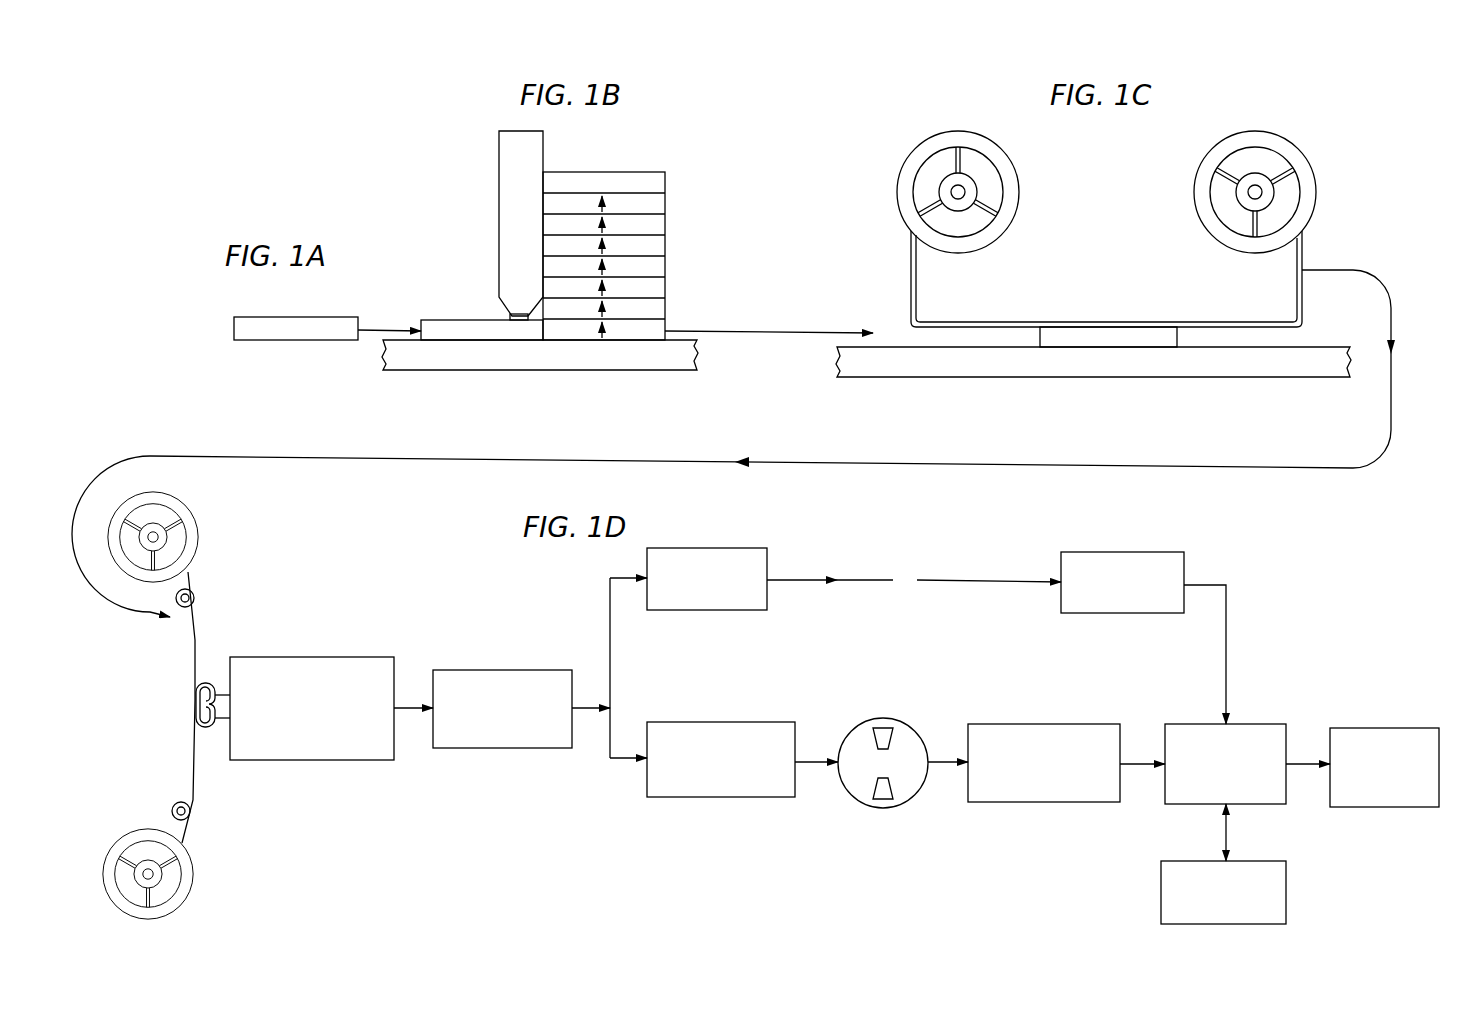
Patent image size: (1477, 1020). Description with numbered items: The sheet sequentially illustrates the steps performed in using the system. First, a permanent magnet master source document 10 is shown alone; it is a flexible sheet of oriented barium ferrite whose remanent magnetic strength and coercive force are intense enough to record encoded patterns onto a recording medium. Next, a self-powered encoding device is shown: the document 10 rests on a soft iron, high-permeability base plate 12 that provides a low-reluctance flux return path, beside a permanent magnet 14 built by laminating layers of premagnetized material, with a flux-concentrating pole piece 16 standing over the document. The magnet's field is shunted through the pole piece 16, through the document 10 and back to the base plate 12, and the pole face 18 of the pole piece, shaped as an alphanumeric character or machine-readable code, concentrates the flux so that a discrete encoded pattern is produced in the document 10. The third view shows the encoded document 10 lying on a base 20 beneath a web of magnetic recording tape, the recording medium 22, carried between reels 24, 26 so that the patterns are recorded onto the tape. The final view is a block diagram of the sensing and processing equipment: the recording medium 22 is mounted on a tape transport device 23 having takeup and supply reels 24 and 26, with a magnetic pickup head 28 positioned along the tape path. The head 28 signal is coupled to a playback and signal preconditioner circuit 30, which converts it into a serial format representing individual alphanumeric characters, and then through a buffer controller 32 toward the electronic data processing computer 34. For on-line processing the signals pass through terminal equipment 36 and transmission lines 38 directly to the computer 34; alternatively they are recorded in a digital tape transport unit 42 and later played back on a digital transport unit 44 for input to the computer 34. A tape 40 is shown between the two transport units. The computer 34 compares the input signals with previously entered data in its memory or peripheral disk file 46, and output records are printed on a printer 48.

In FIG. 1A, the permanent magnet master source document 10 is at (257, 325).
In FIG. 1B, the permanent magnet master source document 10 is at (470, 319).
In FIG. 1C, the permanent magnet master source document 10 is at (1098, 331).
In FIG. 1B, the base plate 12 is at (548, 369).
In FIG. 1B, the permanent magnet 14 is at (668, 236).
In FIG. 1B, the pole piece 16 is at (530, 214).
In FIG. 1B, the pole face 18 is at (510, 319).
In FIG. 1C, the support base 20 is at (1125, 371).
In FIG. 1C, the recording medium 22 is at (963, 322).
In FIG. 1D, the recording medium 22 is at (202, 634).
In FIG. 1D, the tape transport device 23 is at (156, 692).
In FIG. 1C, the takeup reel 24 is at (913, 164).
In FIG. 1D, the takeup reel 24 is at (194, 527).
In FIG. 1C, the supply reel 26 is at (1296, 157).
In FIG. 1D, the supply reel 26 is at (188, 879).
In FIG. 1D, the magnetic pickup head 28 is at (205, 728).
In FIG. 1D, the playback and signal preconditioner circuit 30 is at (306, 657).
In FIG. 1D, the buffer controller 32 is at (494, 670).
In FIG. 1D, the electronic data processing computer 34 is at (1246, 725).
In FIG. 1D, the terminal equipment 36 is at (770, 560).
In FIG. 1D, the transmission lines 38 is at (960, 580).
In FIG. 1D, the tape 40 is at (900, 720).
In FIG. 1D, the digital tape transport unit 42 is at (735, 722).
In FIG. 1D, the digital transport unit 44 is at (1058, 724).
In FIG. 1D, the peripheral disk file 46 is at (1161, 871).
In FIG. 1D, the printer 48 is at (1360, 730).